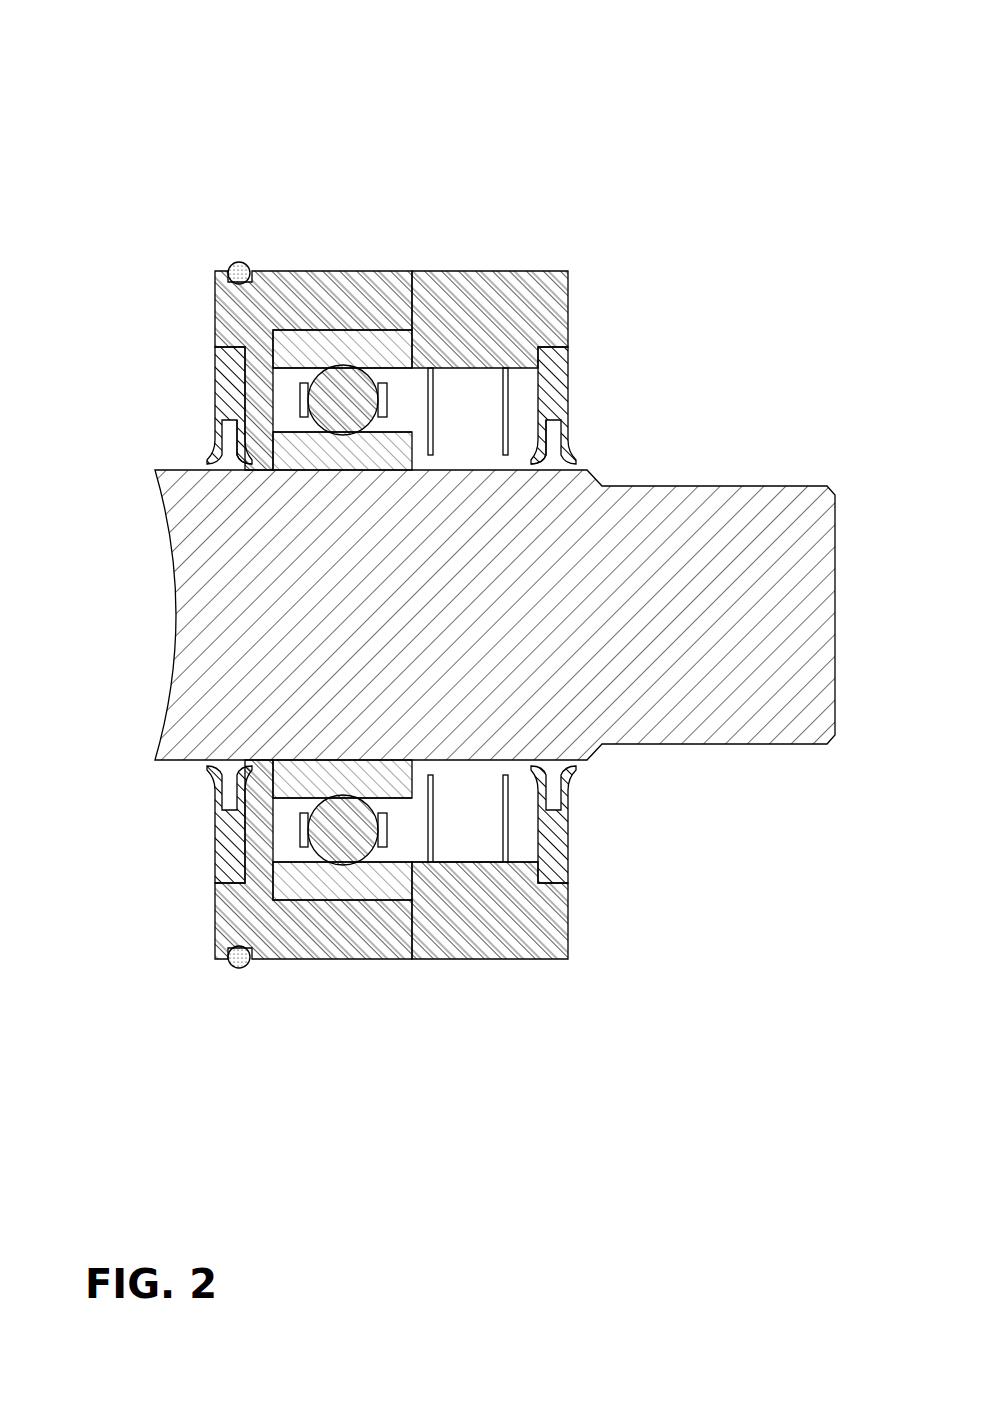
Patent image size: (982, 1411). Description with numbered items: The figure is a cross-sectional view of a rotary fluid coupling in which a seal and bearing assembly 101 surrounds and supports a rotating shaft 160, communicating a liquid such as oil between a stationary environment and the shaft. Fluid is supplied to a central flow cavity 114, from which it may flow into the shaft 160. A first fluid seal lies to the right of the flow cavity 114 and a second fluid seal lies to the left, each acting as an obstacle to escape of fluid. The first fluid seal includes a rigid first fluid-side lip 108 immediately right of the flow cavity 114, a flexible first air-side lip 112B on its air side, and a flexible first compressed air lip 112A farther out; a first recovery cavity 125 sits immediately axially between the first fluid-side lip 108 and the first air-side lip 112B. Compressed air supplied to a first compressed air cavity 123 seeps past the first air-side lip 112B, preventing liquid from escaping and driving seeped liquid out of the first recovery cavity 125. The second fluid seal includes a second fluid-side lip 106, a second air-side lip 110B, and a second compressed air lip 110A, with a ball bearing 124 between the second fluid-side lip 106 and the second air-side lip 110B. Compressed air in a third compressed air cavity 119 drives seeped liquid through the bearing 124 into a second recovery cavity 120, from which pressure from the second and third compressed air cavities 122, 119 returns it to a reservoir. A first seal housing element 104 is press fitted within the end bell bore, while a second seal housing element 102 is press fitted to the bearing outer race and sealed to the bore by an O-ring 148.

The seal and bearing assembly 101 is at (582, 93).
The second seal housing element 102 is at (264, 282).
The first seal housing element 104 is at (433, 282).
The second fluid-side lip 106 is at (435, 392).
The first fluid-side lip 108 is at (512, 392).
The second compressed air lip 110A is at (207, 448).
The second air-side lip 110B is at (242, 463).
The first compressed air lip 112A is at (573, 450).
The first air-side lip 112B is at (568, 472).
The flow cavity 114 is at (467, 852).
The third compressed air cavity 119 is at (415, 848).
The second recovery cavity 120 is at (260, 850).
The second compressed air cavity 122 is at (230, 787).
The first compressed air cavity 123 is at (552, 797).
The bearing 124 is at (337, 335).
The first recovery cavity 125 is at (513, 852).
The O-ring 148 is at (233, 260).
The shaft 160 is at (745, 480).